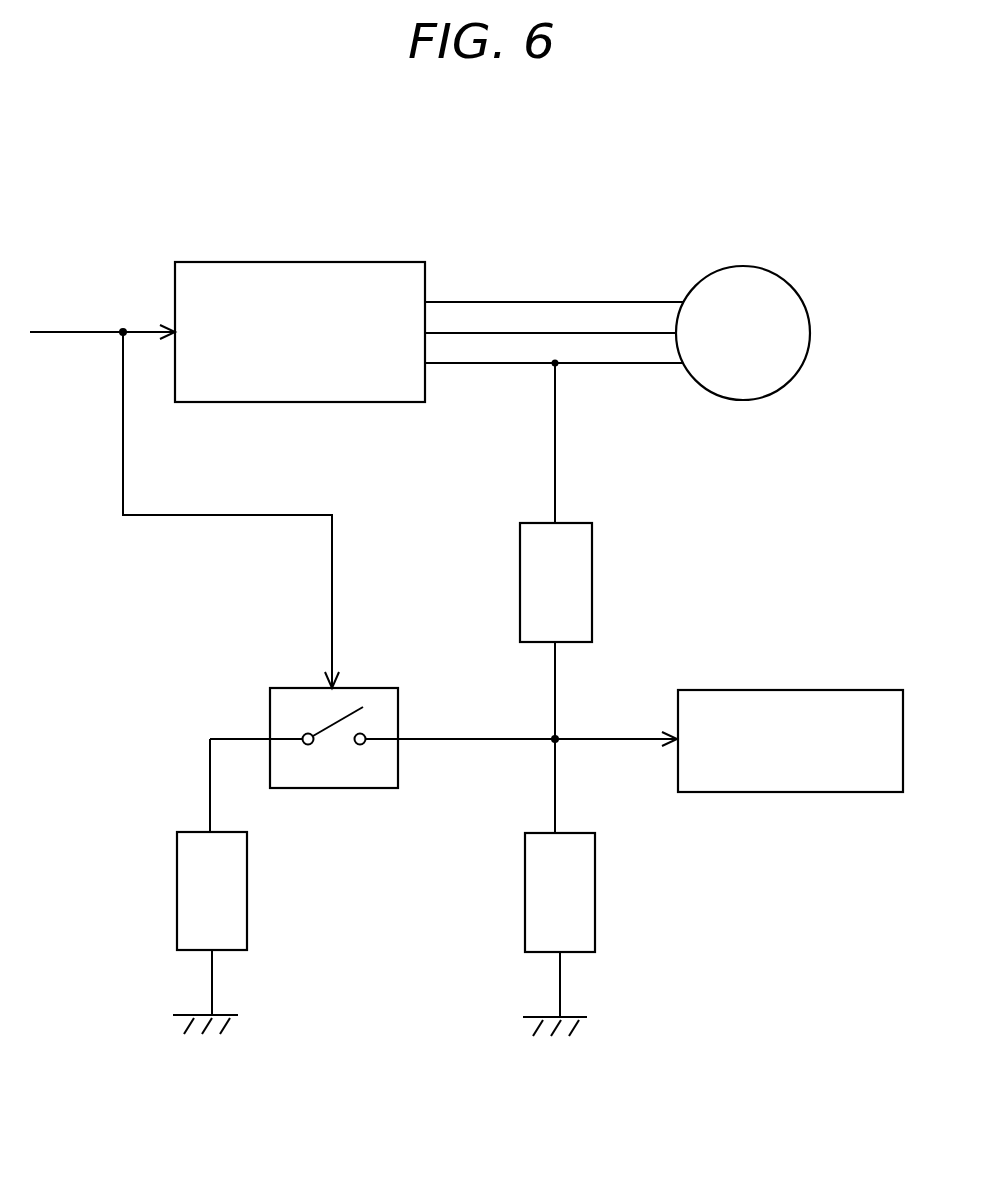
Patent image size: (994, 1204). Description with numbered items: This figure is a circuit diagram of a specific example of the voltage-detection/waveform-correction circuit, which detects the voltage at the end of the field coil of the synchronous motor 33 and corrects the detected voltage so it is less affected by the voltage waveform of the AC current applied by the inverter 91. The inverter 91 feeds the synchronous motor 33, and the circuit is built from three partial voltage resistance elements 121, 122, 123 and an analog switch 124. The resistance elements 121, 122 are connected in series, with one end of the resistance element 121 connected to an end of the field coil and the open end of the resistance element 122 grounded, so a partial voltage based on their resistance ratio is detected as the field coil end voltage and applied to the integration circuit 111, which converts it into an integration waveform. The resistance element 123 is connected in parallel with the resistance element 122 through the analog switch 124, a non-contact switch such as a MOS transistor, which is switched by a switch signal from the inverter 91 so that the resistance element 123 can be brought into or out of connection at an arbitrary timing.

The inverter 91 is at (378, 262).
The synchronous motor 33 is at (767, 270).
The partial voltage resistance element 121 is at (592, 607).
The partial voltage resistance element 122 is at (595, 892).
The partial voltage resistance element 123 is at (247, 913).
The analog switch 124 is at (368, 688).
The integration circuit 111 is at (776, 690).